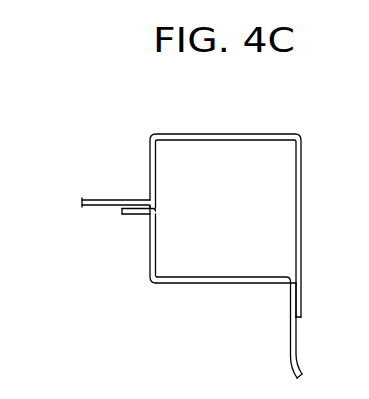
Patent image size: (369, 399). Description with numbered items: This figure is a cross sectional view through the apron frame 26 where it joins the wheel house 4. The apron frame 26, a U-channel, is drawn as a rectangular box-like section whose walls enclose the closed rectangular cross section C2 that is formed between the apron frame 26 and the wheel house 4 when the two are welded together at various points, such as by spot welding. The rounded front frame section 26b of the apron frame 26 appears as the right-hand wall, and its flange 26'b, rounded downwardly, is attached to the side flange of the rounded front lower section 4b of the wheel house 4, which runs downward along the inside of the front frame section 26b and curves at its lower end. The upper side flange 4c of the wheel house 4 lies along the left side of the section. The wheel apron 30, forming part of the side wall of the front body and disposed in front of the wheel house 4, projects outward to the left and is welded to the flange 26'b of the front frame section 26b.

The apron frame 26 is at (211, 192).
The front frame section 26b is at (278, 134).
The flange of the front frame section 26'b is at (132, 161).
The wheel apron 30 is at (113, 198).
The wheel house 4 is at (229, 331).
The rounded front lower section 4b is at (290, 361).
The upper side flange 4c is at (133, 216).
The closed rectangular cross section C2 is at (237, 218).